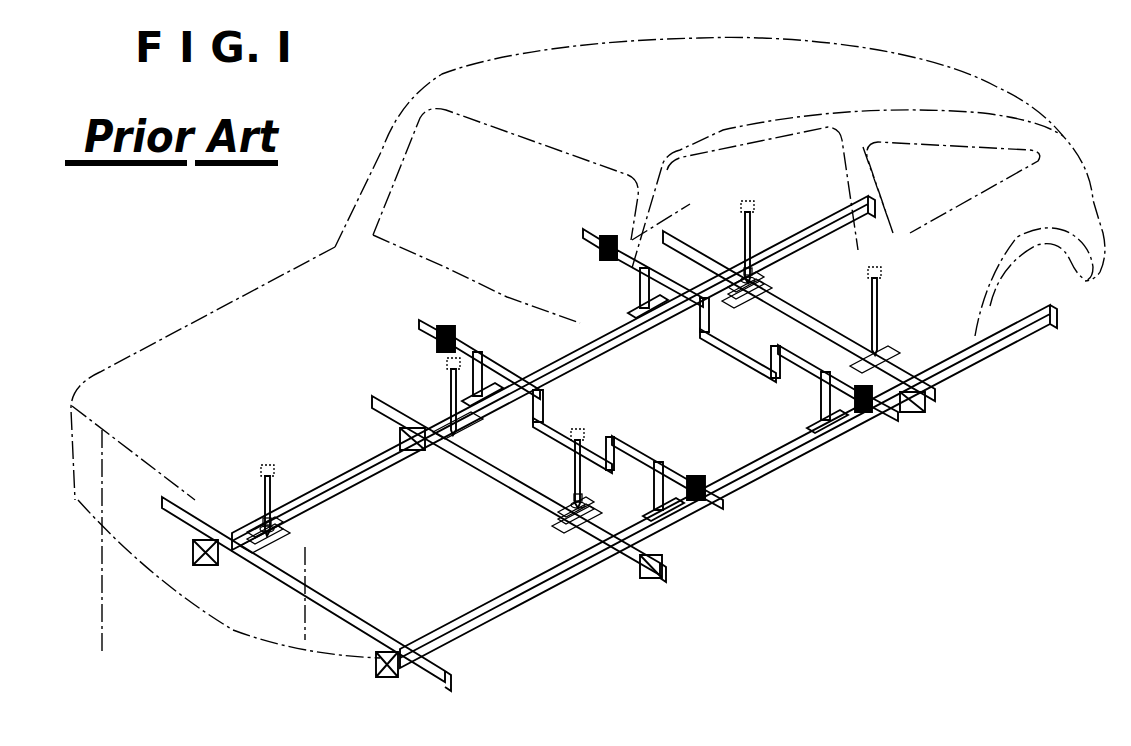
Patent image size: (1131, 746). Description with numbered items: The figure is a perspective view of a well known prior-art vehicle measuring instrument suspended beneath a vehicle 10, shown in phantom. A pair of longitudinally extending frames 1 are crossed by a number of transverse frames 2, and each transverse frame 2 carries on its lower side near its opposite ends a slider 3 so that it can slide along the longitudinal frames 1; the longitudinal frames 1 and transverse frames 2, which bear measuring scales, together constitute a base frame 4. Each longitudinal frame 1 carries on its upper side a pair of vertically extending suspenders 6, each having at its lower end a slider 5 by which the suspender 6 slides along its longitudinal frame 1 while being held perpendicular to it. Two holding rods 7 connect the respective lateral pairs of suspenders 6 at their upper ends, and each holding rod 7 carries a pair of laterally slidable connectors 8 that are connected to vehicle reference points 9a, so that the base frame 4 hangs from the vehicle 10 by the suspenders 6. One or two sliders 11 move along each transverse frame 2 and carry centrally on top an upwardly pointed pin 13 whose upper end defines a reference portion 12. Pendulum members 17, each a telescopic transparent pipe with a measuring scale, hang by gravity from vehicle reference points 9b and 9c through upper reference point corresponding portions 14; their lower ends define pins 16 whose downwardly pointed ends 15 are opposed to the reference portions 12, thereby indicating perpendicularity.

The longitudinally extending frame 1 is at (358, 474).
The transverse frame 2 is at (370, 624).
The slider 3 is at (195, 550).
The base frame 4 is at (462, 660).
The slider 5 is at (630, 315).
The suspender 6 is at (640, 298).
The holding rod 7 is at (552, 427).
The connector 8 is at (590, 248).
The vehicle reference point 9a is at (612, 236).
The vehicle reference point 9b is at (268, 464).
The vehicle reference point 9c is at (445, 360).
The vehicle 10 is at (468, 80).
The slider 11 is at (250, 568).
The reference portion 12 is at (247, 528).
The upwardly pointed pin 13 is at (233, 560).
The reference point corresponding portion 14 is at (276, 473).
The downwardly pointed end 15 is at (276, 538).
The pin 16 is at (278, 515).
The pendulum member 17 is at (262, 496).